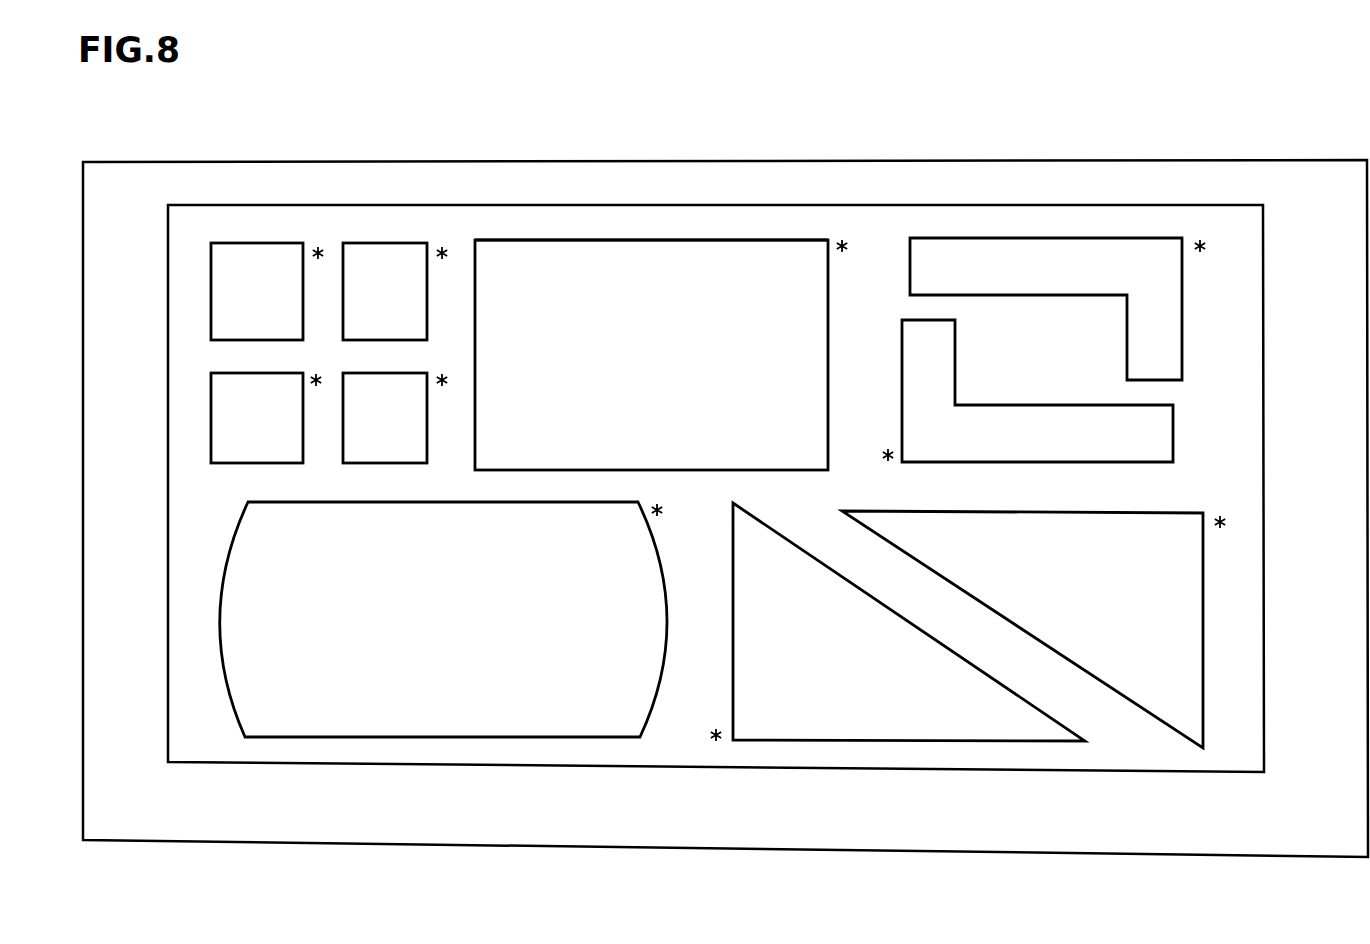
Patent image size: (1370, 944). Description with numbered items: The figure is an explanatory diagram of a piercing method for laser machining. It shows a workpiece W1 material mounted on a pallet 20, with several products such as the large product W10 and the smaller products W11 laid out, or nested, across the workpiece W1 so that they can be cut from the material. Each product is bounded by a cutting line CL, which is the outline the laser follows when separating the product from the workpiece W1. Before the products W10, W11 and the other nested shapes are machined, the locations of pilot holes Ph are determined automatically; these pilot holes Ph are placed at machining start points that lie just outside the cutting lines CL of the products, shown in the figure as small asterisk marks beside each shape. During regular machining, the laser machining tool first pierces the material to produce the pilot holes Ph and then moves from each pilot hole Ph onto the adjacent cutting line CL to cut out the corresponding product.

The pallet 20 is at (1306, 185).
The product W11 is at (365, 255).
The product W10 is at (668, 262).
The cutting line CL is at (578, 238).
The workpiece W1 is at (1175, 225).
The pilot hole Ph is at (443, 247).